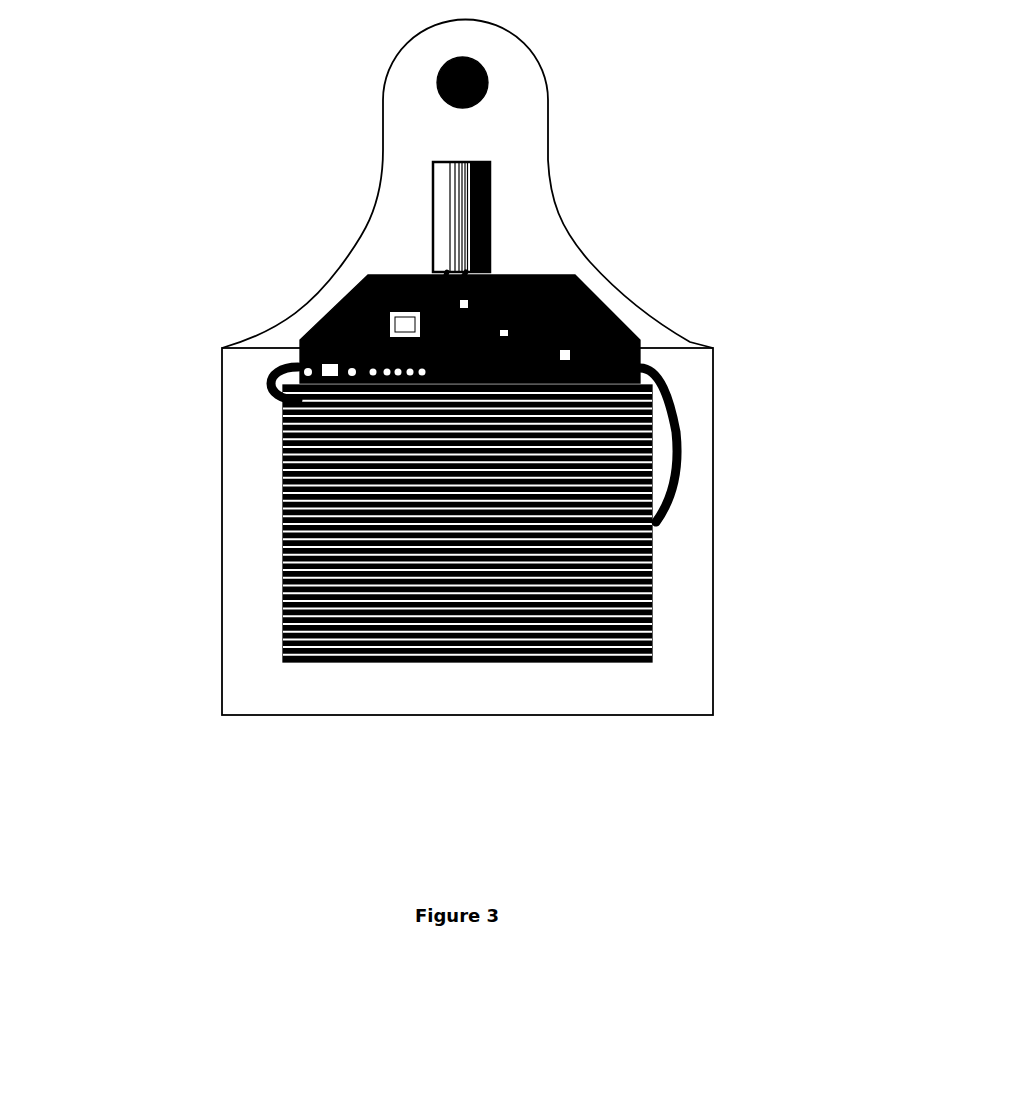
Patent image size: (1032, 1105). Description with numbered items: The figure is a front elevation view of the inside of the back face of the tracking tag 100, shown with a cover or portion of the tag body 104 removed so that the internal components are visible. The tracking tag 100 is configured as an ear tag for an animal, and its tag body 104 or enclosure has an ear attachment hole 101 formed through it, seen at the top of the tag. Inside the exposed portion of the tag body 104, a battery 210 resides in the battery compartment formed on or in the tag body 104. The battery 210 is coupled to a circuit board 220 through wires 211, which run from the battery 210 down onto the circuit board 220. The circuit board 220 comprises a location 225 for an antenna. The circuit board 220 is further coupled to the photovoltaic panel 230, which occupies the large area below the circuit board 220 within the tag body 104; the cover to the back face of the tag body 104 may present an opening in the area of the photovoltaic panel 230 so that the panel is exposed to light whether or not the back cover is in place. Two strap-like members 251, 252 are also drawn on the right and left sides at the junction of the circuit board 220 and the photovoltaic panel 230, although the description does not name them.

The tracking tag 100 is at (174, 718).
The ear attachment hole 101 is at (508, 81).
The tag body 104 is at (625, 712).
The battery 210 is at (506, 237).
The wires 211 is at (428, 284).
The circuit board 220 is at (311, 317).
The location for an antenna 225 is at (612, 324).
The photovoltaic panel 230 is at (666, 597).
The right strap 251 is at (689, 434).
The left strap 252 is at (251, 368).